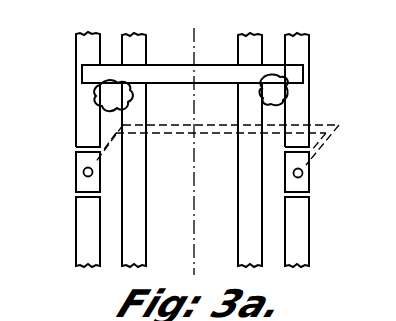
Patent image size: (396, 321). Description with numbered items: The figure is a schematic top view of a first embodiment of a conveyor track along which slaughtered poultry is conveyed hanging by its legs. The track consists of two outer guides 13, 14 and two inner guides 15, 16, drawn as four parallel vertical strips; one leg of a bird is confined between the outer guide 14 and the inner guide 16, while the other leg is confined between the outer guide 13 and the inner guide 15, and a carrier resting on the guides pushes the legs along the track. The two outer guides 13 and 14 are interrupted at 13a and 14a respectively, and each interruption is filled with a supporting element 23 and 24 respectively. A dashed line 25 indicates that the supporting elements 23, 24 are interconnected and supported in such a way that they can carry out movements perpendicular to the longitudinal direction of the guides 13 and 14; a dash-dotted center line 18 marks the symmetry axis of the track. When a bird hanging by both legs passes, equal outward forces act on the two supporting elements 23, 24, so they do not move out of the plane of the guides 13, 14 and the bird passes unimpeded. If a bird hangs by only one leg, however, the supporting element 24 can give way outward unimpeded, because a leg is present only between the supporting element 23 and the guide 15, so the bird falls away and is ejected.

The outer guide 13 is at (80, 46).
The outer guide 14 is at (306, 43).
The inner guide 15 is at (135, 37).
The inner guide 16 is at (253, 40).
The center axis 18 is at (207, 137).
The dashed line 25 is at (331, 120).
The interruption 13a is at (70, 172).
The interruption 14a is at (313, 178).
The supporting element 23 is at (78, 183).
The supporting element 24 is at (306, 185).